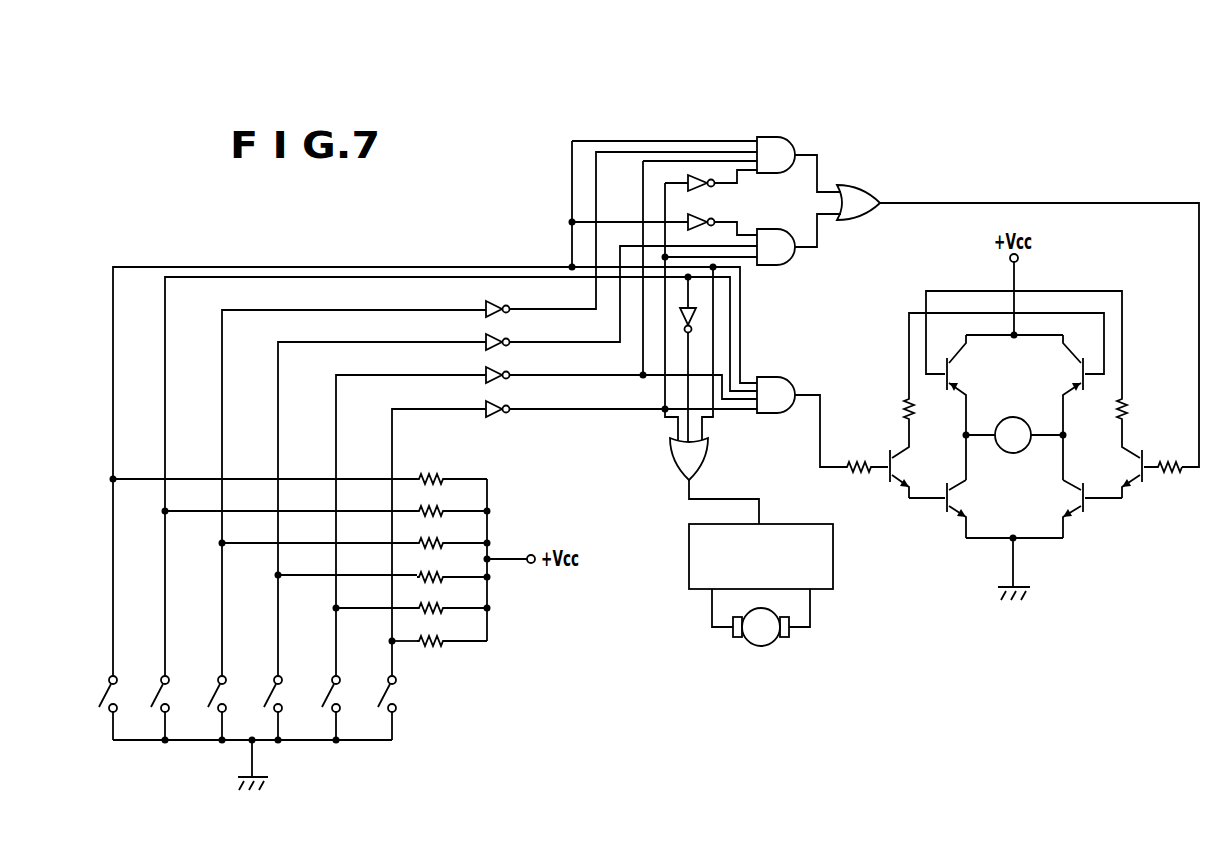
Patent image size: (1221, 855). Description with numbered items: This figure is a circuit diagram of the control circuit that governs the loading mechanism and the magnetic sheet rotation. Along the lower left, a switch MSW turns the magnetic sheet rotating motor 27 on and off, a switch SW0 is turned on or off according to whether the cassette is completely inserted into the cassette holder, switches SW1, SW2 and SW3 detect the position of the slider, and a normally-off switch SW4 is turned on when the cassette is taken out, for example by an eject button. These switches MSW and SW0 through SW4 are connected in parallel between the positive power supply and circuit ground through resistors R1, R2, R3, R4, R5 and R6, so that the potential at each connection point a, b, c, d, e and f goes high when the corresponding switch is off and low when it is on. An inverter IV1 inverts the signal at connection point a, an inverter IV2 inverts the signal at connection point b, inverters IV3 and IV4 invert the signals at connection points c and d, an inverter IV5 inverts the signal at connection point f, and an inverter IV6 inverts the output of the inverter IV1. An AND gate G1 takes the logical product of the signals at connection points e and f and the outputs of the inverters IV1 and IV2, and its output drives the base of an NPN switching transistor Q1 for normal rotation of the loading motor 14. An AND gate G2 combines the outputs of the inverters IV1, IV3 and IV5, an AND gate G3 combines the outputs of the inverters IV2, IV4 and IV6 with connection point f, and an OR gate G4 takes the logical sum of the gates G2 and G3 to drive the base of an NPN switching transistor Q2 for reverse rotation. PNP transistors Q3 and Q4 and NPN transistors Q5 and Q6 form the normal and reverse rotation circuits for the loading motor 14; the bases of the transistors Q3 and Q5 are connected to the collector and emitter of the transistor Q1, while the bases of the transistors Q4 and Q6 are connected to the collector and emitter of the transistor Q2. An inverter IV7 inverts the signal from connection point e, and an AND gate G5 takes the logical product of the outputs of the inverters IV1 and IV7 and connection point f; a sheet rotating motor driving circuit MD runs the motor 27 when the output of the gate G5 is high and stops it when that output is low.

The loading motor 14 is at (1024, 417).
The magnetic sheet rotating motor 27 is at (755, 646).
The sheet rotating motor driving circuit MD is at (833, 542).
The NPN switching transistor Q1 is at (904, 467).
The NPN switching transistor Q2 is at (1130, 462).
The PNP switching transistor Q3 is at (1074, 377).
The PNP switching transistor Q4 is at (956, 377).
The NPN switching transistor Q5 is at (964, 501).
The NPN switching transistor Q6 is at (1073, 497).
The inverter IV1 is at (486, 402).
The inverter IV2 is at (486, 368).
The inverter IV3 is at (486, 335).
The inverter IV4 is at (486, 302).
The inverter IV5 is at (712, 216).
The inverter IV6 is at (712, 193).
The inverter IV7 is at (699, 313).
The AND gate G1 is at (776, 395).
The AND gate G2 is at (776, 247).
The AND gate G3 is at (776, 155).
The OR gate G4 is at (858, 202).
The AND gate G5 is at (689, 459).
The resistor R1 is at (428, 636).
The resistor R2 is at (428, 603).
The resistor R3 is at (428, 572).
The resistor R4 is at (428, 538).
The resistor R5 is at (428, 506).
The resistor R6 is at (428, 474).
The switch SW0 is at (340, 696).
The switch SW1 is at (282, 696).
The switch SW2 is at (226, 696).
The switch SW3 is at (169, 696).
The switch SW4 is at (117, 696).
The switch MSW is at (383, 694).
The connection point a is at (394, 644).
The connection point b is at (338, 611).
The connection point c is at (280, 578).
The connection point d is at (224, 546).
The connection point e is at (167, 514).
The connection point f is at (115, 482).